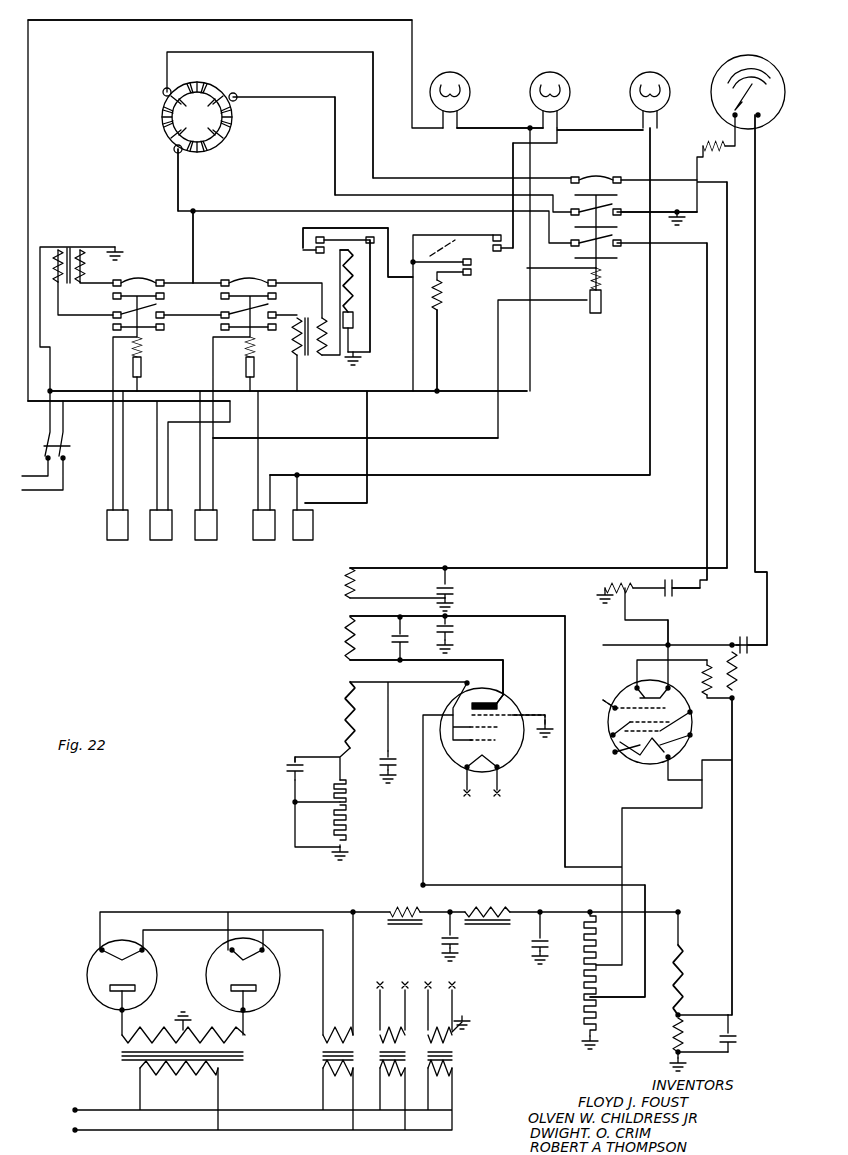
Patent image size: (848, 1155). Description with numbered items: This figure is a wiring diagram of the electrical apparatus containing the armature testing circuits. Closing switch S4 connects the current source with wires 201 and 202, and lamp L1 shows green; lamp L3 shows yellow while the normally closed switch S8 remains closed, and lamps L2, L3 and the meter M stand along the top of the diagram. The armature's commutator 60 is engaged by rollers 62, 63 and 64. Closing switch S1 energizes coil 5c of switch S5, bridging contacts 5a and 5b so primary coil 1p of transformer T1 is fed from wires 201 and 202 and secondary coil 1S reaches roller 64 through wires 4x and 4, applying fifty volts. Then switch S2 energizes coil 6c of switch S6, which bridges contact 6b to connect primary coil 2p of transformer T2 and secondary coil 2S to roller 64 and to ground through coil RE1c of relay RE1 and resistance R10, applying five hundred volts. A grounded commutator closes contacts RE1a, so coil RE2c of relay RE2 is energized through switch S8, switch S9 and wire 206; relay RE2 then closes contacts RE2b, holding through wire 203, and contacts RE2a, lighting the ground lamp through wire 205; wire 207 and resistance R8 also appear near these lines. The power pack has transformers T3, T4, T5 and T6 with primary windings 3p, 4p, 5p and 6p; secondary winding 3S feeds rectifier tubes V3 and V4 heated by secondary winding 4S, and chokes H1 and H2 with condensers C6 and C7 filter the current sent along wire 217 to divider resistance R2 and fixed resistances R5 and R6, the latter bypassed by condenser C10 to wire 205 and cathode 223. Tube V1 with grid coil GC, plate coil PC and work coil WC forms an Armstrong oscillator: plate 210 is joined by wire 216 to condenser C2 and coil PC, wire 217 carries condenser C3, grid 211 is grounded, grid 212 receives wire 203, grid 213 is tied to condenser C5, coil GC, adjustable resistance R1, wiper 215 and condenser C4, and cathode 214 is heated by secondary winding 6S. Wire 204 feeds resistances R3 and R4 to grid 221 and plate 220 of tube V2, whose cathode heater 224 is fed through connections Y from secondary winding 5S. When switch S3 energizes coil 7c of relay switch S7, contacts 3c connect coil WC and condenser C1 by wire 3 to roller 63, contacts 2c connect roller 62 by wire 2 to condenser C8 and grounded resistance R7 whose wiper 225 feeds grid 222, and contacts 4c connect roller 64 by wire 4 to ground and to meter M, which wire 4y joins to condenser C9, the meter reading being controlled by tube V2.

The wire 201 is at (315, 22).
The wire 202 is at (465, 128).
The wire 203 is at (650, 165).
The wire 204 is at (367, 410).
The wire 205 is at (513, 165).
The wire 206 is at (400, 228).
The line 207 is at (443, 450).
The wire 2 is at (334, 131).
The wire 3 is at (374, 76).
The wire 4 is at (177, 189).
The wire 4x is at (193, 255).
The wire 4y is at (756, 172).
The roller 62 is at (237, 98).
The roller 63 is at (162, 93).
The roller 64 is at (181, 153).
The lamp L1 is at (451, 72).
The lamp L2 is at (551, 72).
The lamp L3 is at (650, 72).
The meter M is at (714, 70).
The resistor R8 is at (706, 142).
The contacts 3c is at (634, 173).
The contacts 4c is at (634, 211).
The contacts 2c is at (596, 237).
The relay switch S7 is at (609, 279).
The coil 7c is at (602, 300).
The transformer T1 is at (88, 255).
The primary coil 1p is at (56, 276).
The secondary coil 1S is at (80, 284).
The contact 5a is at (138, 281).
The contact 5b is at (162, 306).
The commutator 60 is at (248, 281).
The contact 6b is at (238, 320).
The switch S5 is at (145, 350).
The coil 5c is at (141, 372).
The switch S6 is at (246, 350).
The coil 6c is at (255, 365).
The transformer T2 is at (307, 323).
The primary coil 2p is at (303, 346).
The secondary coil 2S is at (323, 360).
The relay RE1 is at (302, 233).
The contacts RE1a is at (314, 252).
The coil relay RE1c is at (342, 262).
The resistance R10 is at (354, 316).
The contacts RE2a is at (490, 235).
The contacts RE2b is at (472, 274).
The relay RE2 is at (456, 295).
The coil RE2c is at (440, 312).
The switch S4 is at (40, 440).
The switch S1 is at (118, 545).
The switch S2 is at (161, 545).
The switch S3 is at (206, 545).
The switch S8 is at (262, 545).
The switch S9 is at (301, 545).
The work coil WC is at (348, 572).
The condenser C1 is at (437, 588).
The plate coil PC is at (345, 635).
The condenser C2 is at (392, 640).
The ground condenser C3 is at (453, 630).
The wire 217 is at (565, 641).
The wire 216 is at (454, 661).
The grid coil GC is at (344, 714).
The condenser C4 is at (287, 768).
The condenser C5 is at (380, 762).
The wiper 215 is at (325, 791).
The adjustable resistance R1 is at (347, 826).
The tube V1 is at (482, 750).
The plate 210 is at (504, 702).
The grid 211 is at (525, 712).
The grid 212 is at (496, 728).
The grid 213 is at (476, 742).
The cathode 214 is at (499, 765).
The resistance R7 is at (606, 586).
The wiper 225 is at (630, 602).
The condenser C8 is at (675, 596).
The condenser C9 is at (748, 655).
The resistance R3 is at (704, 670).
The resistance R4 is at (737, 685).
The tube V2 is at (650, 741).
The plate 220 is at (652, 689).
The grid 221 is at (614, 712).
The grid 222 is at (612, 736).
The cathode 223 is at (676, 718).
The connection Y is at (619, 756).
The cathode heater 224 is at (650, 762).
The choke H1 is at (400, 910).
The choke H2 is at (480, 910).
The condenser C6 is at (442, 950).
The condenser C7 is at (532, 950).
The variable voltage divider resistance R2 is at (586, 1000).
The fixed divider resistance R5 is at (684, 992).
The fixed divider resistance R6 is at (684, 1040).
The condenser C10 is at (737, 1044).
The rectifier tube V4 is at (112, 987).
The rectifier tube V3 is at (251, 986).
The secondary winding 3S is at (147, 1030).
The transformer T3 is at (165, 1057).
The primary winding 3p is at (192, 1078).
The secondary winding 4S is at (322, 1040).
The transformer T4 is at (321, 1060).
The primary winding 4p is at (338, 1080).
The secondary winding 5S is at (392, 1012).
The transformer T5 is at (383, 1065).
The primary winding 5p is at (392, 1080).
The secondary winding 6S is at (447, 1012).
The transformer T6 is at (453, 1064).
The primary winding 6p is at (440, 1081).